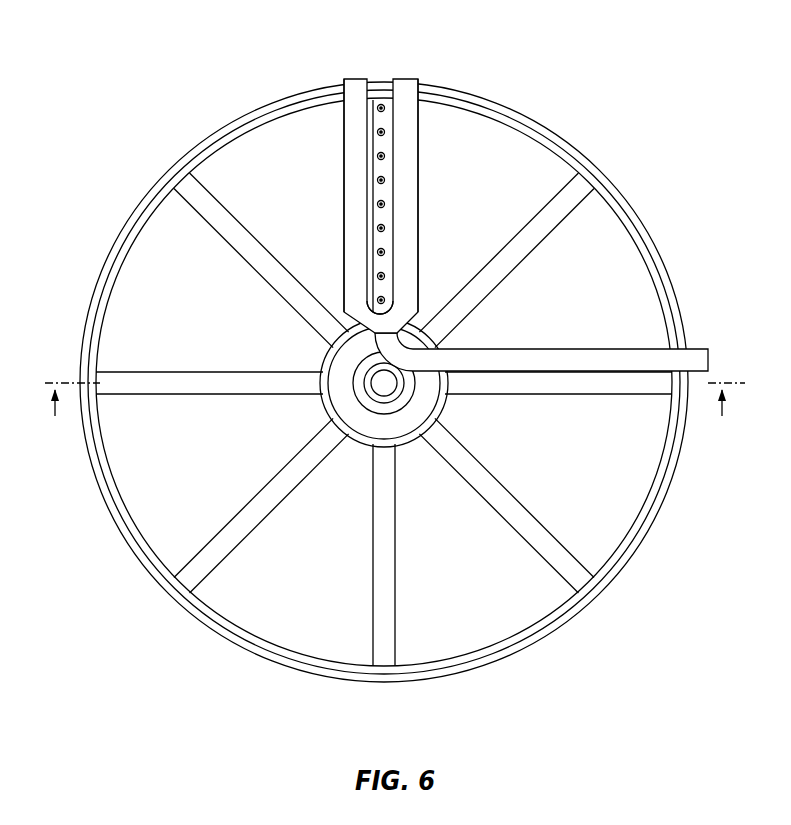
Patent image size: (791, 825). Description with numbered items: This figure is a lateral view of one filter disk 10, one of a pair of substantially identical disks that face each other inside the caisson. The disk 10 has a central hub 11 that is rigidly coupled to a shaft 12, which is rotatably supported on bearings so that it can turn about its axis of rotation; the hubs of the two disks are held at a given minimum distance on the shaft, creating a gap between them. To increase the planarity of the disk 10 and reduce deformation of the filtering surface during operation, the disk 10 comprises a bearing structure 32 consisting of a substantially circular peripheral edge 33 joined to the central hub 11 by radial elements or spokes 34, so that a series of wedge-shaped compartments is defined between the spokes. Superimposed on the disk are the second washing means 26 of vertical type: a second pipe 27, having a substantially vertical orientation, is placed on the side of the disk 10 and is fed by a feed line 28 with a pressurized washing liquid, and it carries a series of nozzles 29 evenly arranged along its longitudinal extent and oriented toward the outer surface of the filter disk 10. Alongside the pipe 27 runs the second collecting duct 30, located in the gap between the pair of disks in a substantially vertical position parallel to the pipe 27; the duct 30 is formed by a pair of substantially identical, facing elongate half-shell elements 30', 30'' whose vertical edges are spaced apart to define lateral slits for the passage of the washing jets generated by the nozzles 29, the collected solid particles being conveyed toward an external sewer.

The filter disk 10 is at (87, 260).
The central hub 11 is at (445, 405).
The shaft 12 is at (380, 376).
The second washing means 26 is at (453, 132).
The second pipe 27 is at (387, 165).
The feed line 28 is at (540, 357).
The nozzles 29 is at (380, 252).
The second collecting duct 30 is at (406, 173).
The half-shell element 30' is at (316, 178).
The half-shell element 30'' is at (474, 177).
The bearing structure 32 is at (625, 185).
The peripheral edge 33 is at (108, 480).
The spokes 34 is at (255, 528).